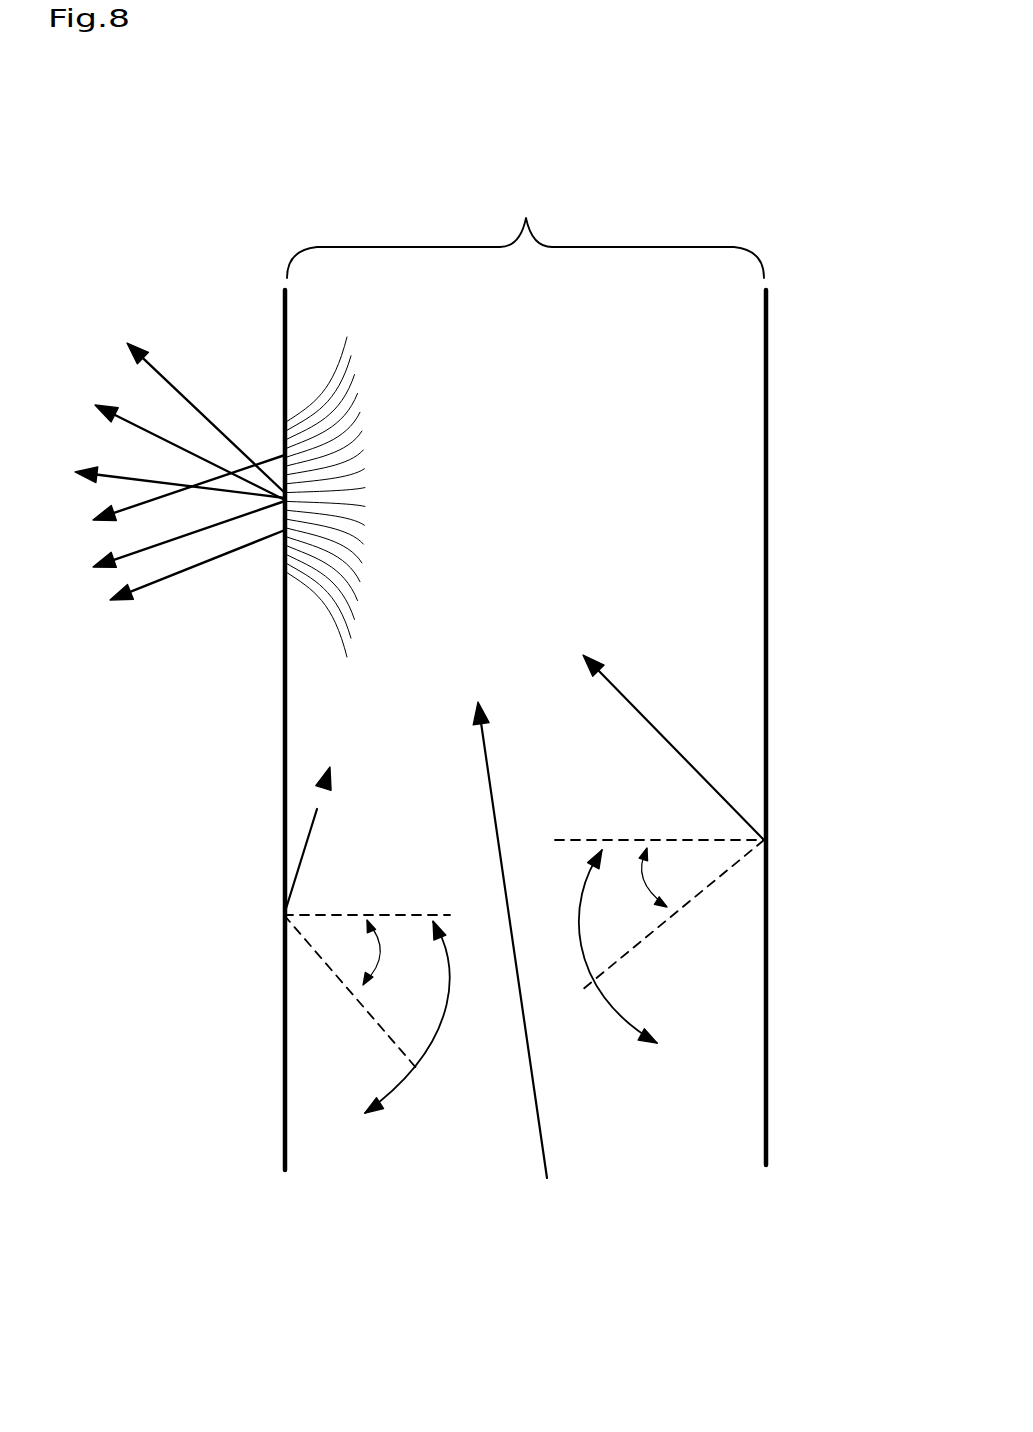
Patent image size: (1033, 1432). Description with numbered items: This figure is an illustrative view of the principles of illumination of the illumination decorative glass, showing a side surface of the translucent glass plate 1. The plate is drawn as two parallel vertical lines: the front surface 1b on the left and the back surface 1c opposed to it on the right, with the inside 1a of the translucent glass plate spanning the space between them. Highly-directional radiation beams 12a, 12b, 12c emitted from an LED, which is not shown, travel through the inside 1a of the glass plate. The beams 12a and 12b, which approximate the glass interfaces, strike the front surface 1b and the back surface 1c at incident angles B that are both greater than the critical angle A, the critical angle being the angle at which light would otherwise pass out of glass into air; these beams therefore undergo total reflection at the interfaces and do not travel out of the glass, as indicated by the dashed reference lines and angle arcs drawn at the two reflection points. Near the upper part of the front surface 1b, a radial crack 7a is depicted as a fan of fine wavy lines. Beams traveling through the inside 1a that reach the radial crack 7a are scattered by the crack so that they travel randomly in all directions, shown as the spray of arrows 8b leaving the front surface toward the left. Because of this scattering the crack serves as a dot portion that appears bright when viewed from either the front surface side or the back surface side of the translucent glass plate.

The translucent glass plate 1 is at (577, 638).
The inside of the translucent glass plate 1a is at (525, 220).
The front surface of the translucent glass plate 1b is at (285, 243).
The back surface of the translucent glass plate 1c is at (766, 243).
The radial crack 7a is at (388, 504).
The emitted light 8b is at (173, 606).
The radiation beam 12a is at (284, 915).
The radiation beam 12b is at (526, 971).
The radiation beam 12c is at (764, 840).